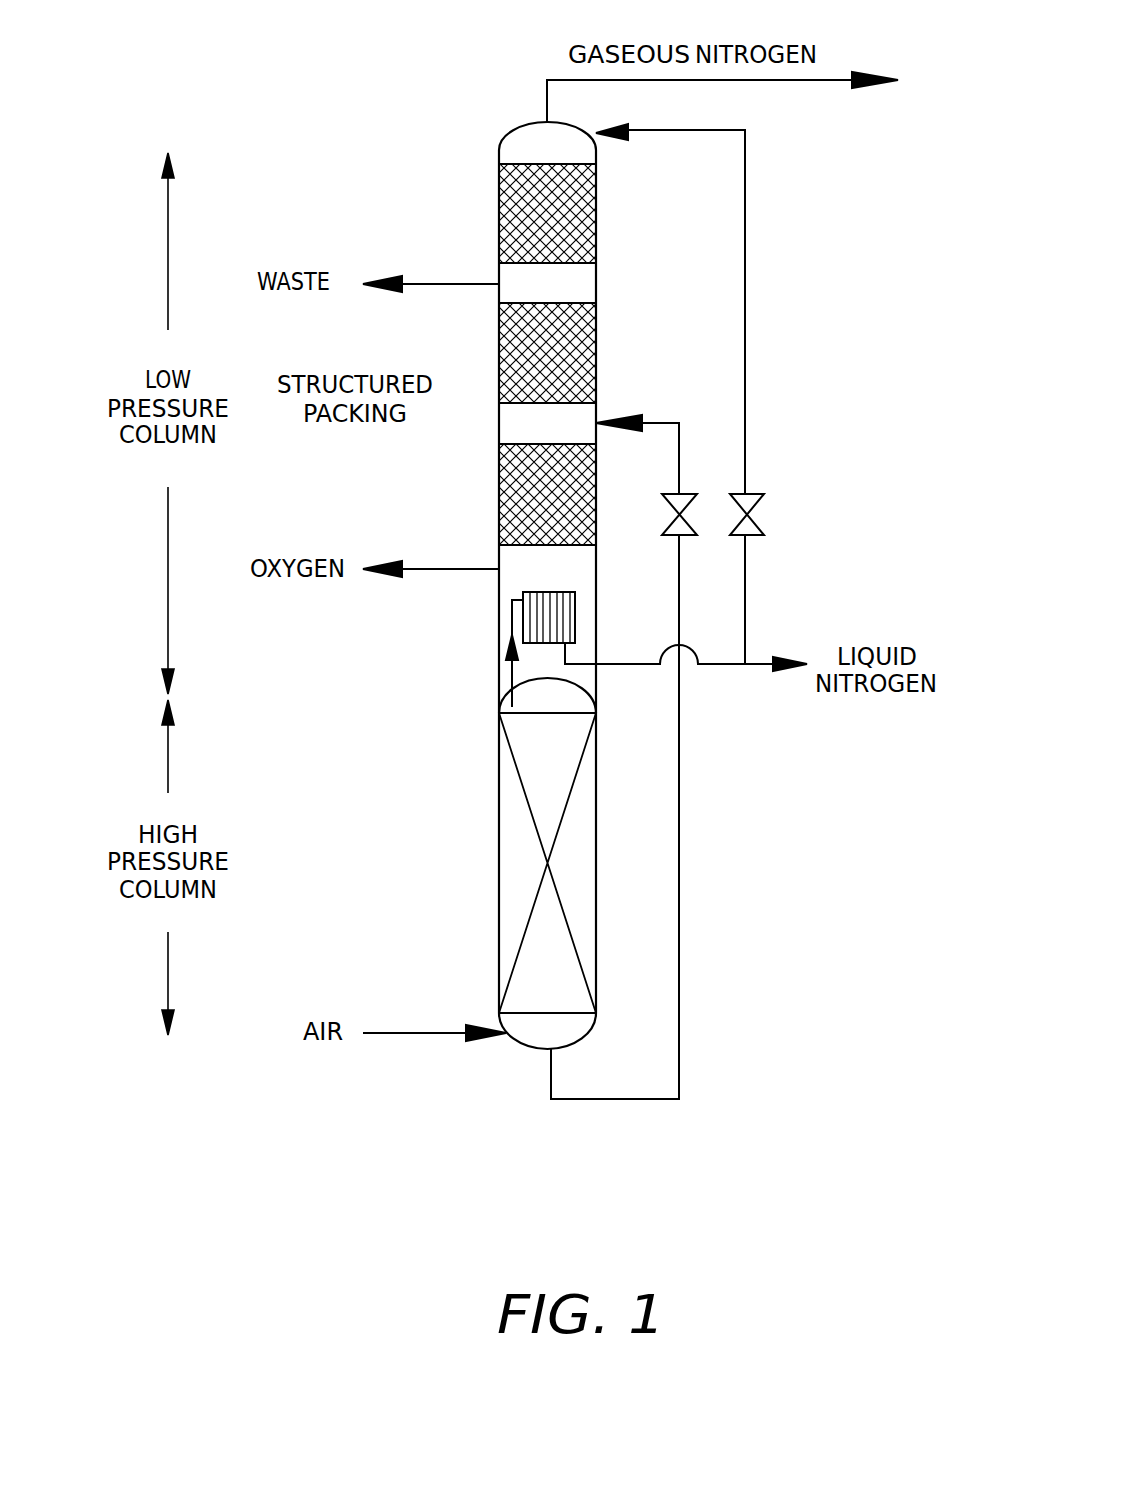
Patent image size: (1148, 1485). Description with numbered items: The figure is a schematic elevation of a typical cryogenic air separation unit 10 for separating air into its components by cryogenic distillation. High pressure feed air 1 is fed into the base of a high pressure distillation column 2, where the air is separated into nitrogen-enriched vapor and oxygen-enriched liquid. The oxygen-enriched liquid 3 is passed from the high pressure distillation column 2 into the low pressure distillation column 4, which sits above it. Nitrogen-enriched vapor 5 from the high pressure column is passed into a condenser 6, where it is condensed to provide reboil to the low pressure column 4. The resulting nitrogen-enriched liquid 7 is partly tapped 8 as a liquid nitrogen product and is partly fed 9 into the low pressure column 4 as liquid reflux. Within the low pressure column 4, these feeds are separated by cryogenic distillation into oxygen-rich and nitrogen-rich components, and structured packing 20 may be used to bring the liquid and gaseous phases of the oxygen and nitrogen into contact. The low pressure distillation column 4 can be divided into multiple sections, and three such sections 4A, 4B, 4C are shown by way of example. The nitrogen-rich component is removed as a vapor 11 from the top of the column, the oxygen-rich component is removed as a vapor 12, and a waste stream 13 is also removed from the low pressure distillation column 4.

The high pressure feed air 1 is at (410, 1035).
The high pressure distillation column 2 is at (499, 876).
The oxygen-enriched liquid 3 is at (620, 1099).
The low pressure distillation column 4 is at (596, 287).
The section of the low pressure distillation column 4A is at (499, 521).
The section of the low pressure distillation column 4B is at (499, 333).
The section of the low pressure distillation column 4C is at (499, 203).
The nitrogen-enriched vapor 5 is at (499, 685).
The condenser 6 is at (575, 618).
The nitrogen-enriched liquid 7 is at (625, 665).
The tapped nitrogen-enriched liquid 8 is at (762, 665).
The liquid reflux feed 9 is at (667, 131).
The cryogenic air separation unit 10 is at (478, 117).
The nitrogen-rich vapor 11 is at (563, 79).
The oxygen-rich vapor 12 is at (440, 570).
The waste stream 13 is at (460, 283).
The structured packing 20 is at (498, 352).